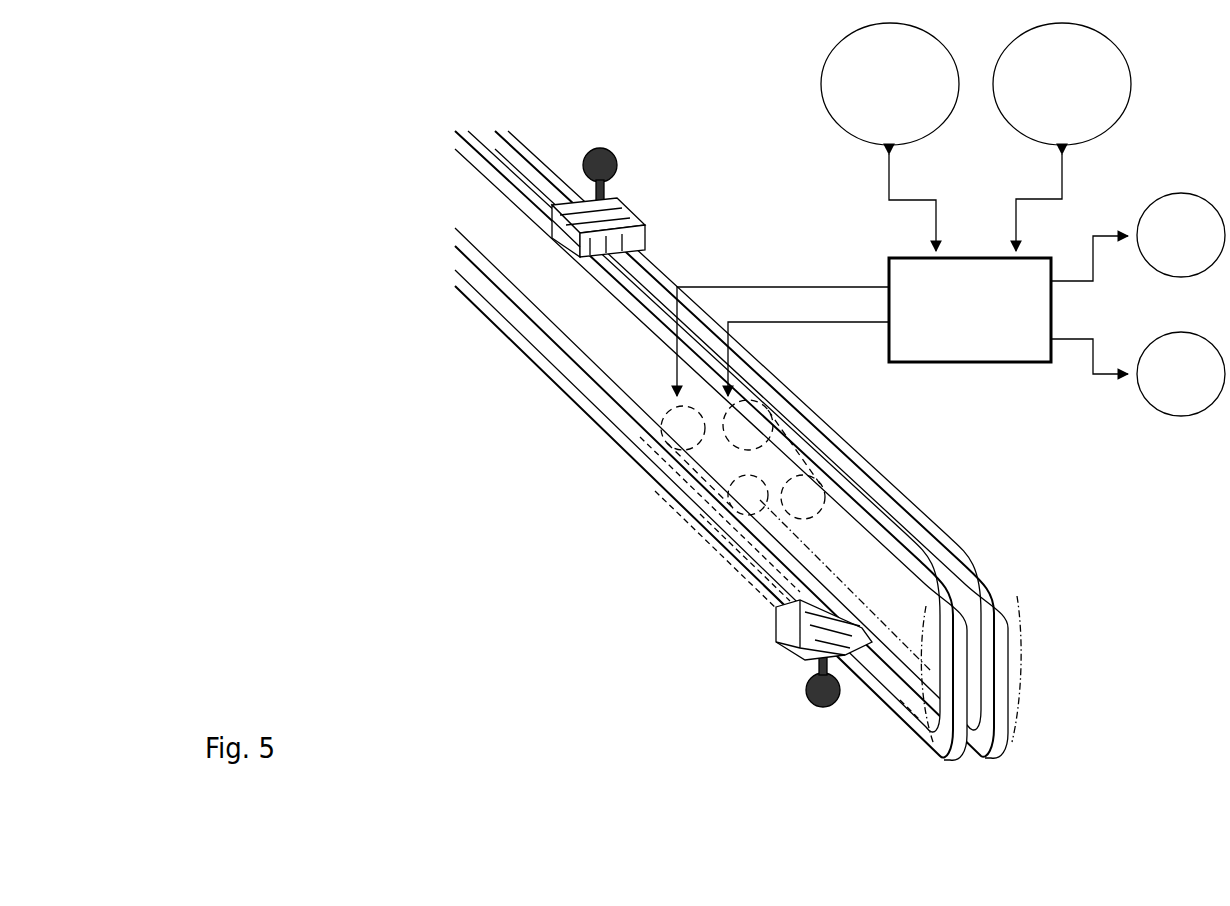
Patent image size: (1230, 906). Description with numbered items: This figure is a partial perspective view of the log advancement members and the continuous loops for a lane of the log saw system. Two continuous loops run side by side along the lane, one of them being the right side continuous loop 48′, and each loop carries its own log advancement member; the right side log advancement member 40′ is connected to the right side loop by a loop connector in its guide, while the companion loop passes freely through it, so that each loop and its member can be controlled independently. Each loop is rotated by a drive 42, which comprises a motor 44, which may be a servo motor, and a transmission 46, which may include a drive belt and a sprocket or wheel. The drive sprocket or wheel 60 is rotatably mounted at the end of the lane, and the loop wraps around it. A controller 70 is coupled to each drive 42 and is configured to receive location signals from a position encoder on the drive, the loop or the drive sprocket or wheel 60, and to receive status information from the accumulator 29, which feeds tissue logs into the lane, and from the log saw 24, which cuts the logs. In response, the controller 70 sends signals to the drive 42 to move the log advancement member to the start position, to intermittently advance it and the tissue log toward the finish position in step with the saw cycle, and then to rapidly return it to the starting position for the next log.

The log saw 24 is at (1073, 96).
The accumulator 29 is at (904, 96).
The right side log advancement member 40′ is at (600, 147).
The drive 42 is at (1193, 247).
The motor 44 is at (685, 495).
The transmission 46 is at (762, 577).
The right side continuous loop 48′ is at (998, 750).
The drive sprocket or wheel 60 is at (902, 717).
The controller 70 is at (985, 322).